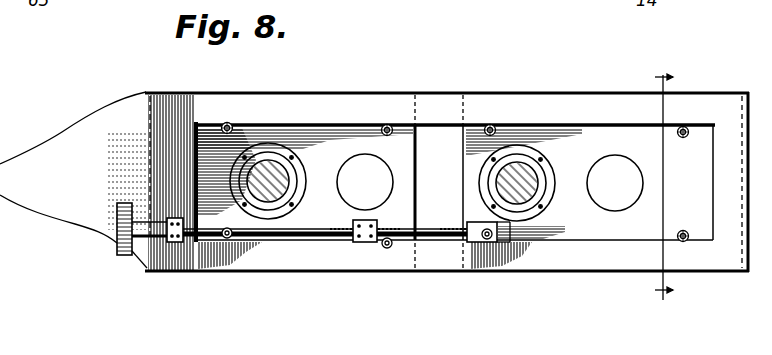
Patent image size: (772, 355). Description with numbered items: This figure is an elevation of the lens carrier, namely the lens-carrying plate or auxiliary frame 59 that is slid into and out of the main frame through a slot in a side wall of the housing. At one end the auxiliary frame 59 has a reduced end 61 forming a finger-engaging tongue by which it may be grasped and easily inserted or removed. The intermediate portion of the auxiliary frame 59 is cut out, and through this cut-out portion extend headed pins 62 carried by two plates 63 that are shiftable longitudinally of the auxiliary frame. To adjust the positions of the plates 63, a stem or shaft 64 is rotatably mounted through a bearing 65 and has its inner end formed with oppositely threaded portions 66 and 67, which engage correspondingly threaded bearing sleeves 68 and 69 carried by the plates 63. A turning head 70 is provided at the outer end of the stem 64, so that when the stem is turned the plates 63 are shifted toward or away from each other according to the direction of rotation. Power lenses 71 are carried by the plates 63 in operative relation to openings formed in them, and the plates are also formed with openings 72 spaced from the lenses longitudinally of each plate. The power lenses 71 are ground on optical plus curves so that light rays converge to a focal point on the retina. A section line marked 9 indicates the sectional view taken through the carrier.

The auxiliary frame 59 is at (525, 97).
The reduced end 61 is at (38, 153).
The headed pins 62 is at (229, 124).
The plates 63 is at (590, 230).
The stem or shaft 64 is at (290, 238).
The bearing 65 is at (175, 243).
The threaded portion 66 is at (345, 242).
The threaded portion 67 is at (508, 242).
The bearing sleeve 68 is at (368, 243).
The bearing sleeve 69 is at (470, 224).
The turning head 70 is at (120, 257).
The power lenses 71 is at (273, 188).
The openings 72 is at (346, 165).
The section line 9- 9 is at (664, 184).